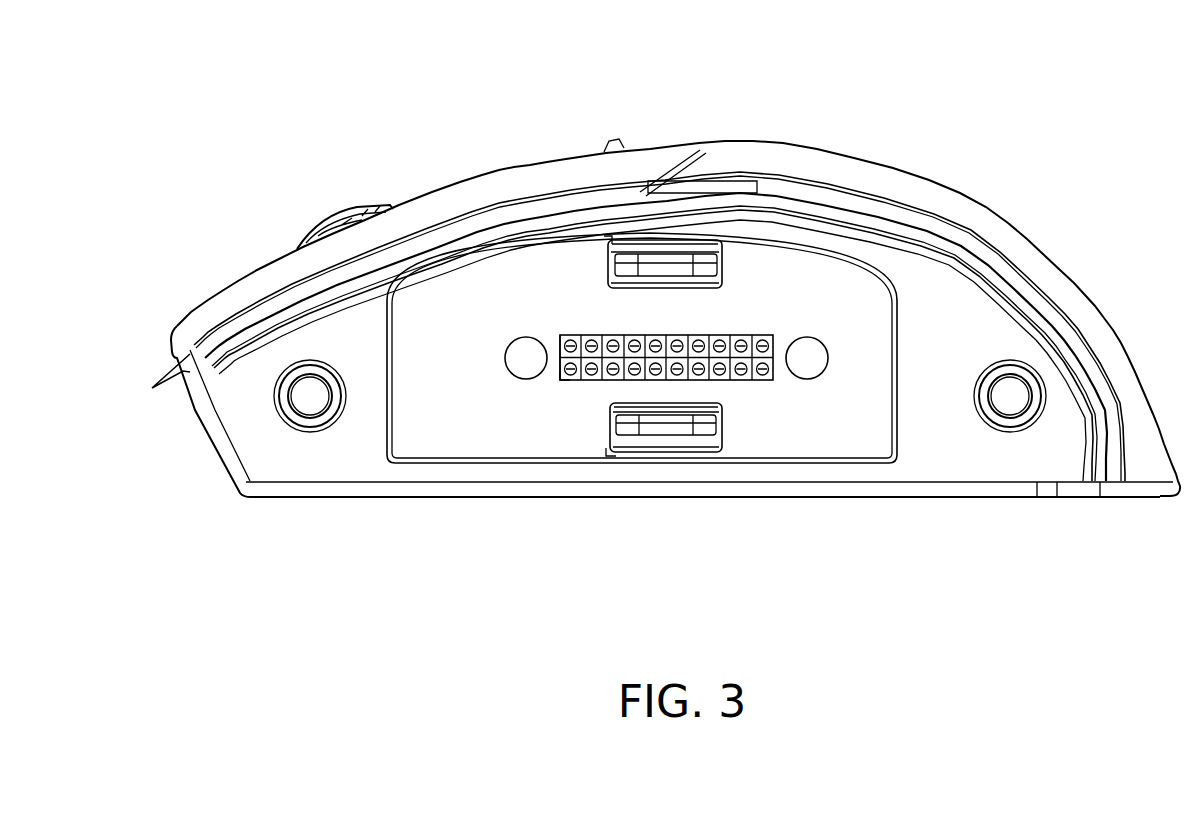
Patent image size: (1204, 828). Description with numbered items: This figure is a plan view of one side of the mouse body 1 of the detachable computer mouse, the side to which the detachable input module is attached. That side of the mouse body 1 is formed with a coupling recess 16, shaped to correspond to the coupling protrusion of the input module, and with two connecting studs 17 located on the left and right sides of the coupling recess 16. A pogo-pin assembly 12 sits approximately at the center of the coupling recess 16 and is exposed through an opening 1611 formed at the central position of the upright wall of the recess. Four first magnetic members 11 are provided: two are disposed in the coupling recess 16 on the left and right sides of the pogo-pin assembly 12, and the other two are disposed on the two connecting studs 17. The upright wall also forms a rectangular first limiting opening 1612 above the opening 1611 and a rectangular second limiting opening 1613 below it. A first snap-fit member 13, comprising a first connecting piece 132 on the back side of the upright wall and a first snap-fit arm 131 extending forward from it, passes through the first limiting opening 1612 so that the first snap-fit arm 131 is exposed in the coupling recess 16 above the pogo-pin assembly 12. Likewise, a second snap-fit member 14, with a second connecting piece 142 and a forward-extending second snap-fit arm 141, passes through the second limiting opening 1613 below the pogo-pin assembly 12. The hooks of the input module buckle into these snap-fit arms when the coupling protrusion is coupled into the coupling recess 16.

The mouse body 1 is at (826, 112).
The first magnetic member 11 is at (310, 398).
The pogo-pin assembly 12 is at (764, 384).
The first snap-fit member 13 is at (683, 169).
The first snap-fit arm 131 is at (707, 267).
The first connecting piece 132 is at (667, 247).
The second snap-fit member 14 is at (683, 502).
The second snap-fit arm 141 is at (690, 432).
The second connecting piece 142 is at (665, 448).
The coupling recess 16 is at (475, 462).
The opening 1611 is at (593, 380).
The first limiting opening 1612 is at (607, 240).
The second limiting opening 1613 is at (611, 454).
The connecting stud 17 is at (307, 432).